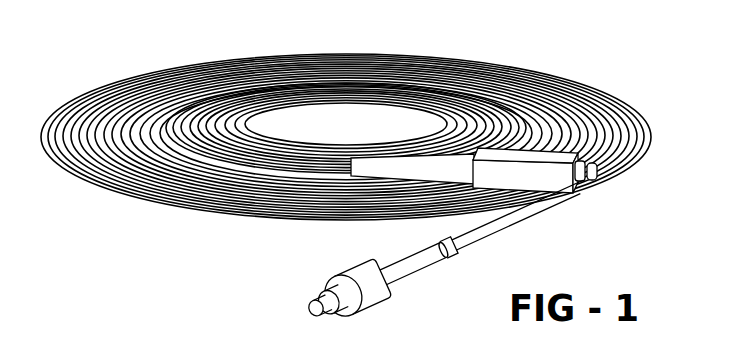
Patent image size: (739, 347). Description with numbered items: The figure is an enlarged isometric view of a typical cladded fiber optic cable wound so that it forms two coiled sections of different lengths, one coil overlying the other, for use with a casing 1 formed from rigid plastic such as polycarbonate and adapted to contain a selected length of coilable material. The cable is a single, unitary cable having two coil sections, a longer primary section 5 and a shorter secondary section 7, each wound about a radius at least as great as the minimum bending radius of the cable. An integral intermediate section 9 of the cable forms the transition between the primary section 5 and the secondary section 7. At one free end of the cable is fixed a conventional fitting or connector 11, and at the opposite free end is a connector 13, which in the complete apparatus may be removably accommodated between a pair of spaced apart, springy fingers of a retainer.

The casing 1 is at (371, 178).
The primary coil section 5 is at (593, 87).
The secondary coil section 7 is at (490, 92).
The intermediate section 9 is at (297, 108).
The connector 11 is at (300, 298).
The connector 13 is at (577, 178).